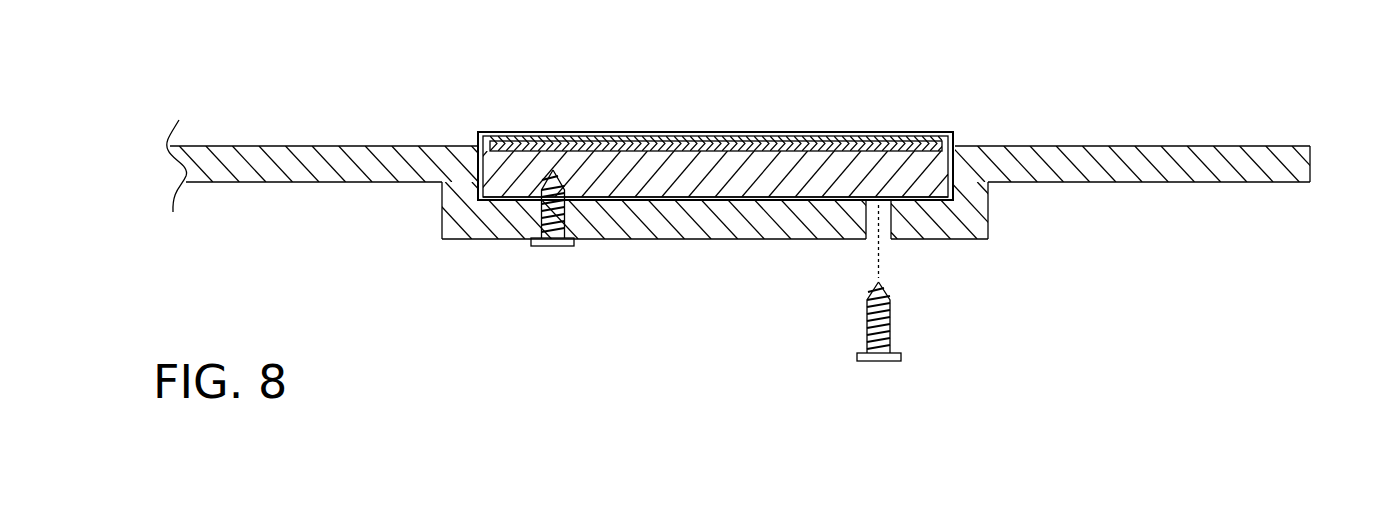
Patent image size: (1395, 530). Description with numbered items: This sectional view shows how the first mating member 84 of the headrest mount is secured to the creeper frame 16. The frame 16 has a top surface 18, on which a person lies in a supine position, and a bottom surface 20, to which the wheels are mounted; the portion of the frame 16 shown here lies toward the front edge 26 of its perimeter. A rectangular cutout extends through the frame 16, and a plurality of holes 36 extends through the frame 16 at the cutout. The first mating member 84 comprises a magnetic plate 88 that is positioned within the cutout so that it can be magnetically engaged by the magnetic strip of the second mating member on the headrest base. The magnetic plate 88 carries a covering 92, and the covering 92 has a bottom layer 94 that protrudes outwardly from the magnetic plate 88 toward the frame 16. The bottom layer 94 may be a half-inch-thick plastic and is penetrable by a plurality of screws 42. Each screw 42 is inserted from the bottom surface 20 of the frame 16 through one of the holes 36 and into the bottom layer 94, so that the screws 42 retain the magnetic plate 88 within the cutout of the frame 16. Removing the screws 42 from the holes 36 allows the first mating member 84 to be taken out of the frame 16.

The frame 16 is at (768, 195).
The top surface 18 is at (1173, 146).
The bottom surface 20 is at (1150, 183).
The front edge 26 is at (1310, 166).
The holes 36 is at (868, 242).
The screws 42 is at (553, 246).
The first mating member 84 is at (757, 147).
The magnetic plate 88 is at (812, 146).
The covering 92 is at (692, 133).
The bottom layer 94 is at (933, 180).